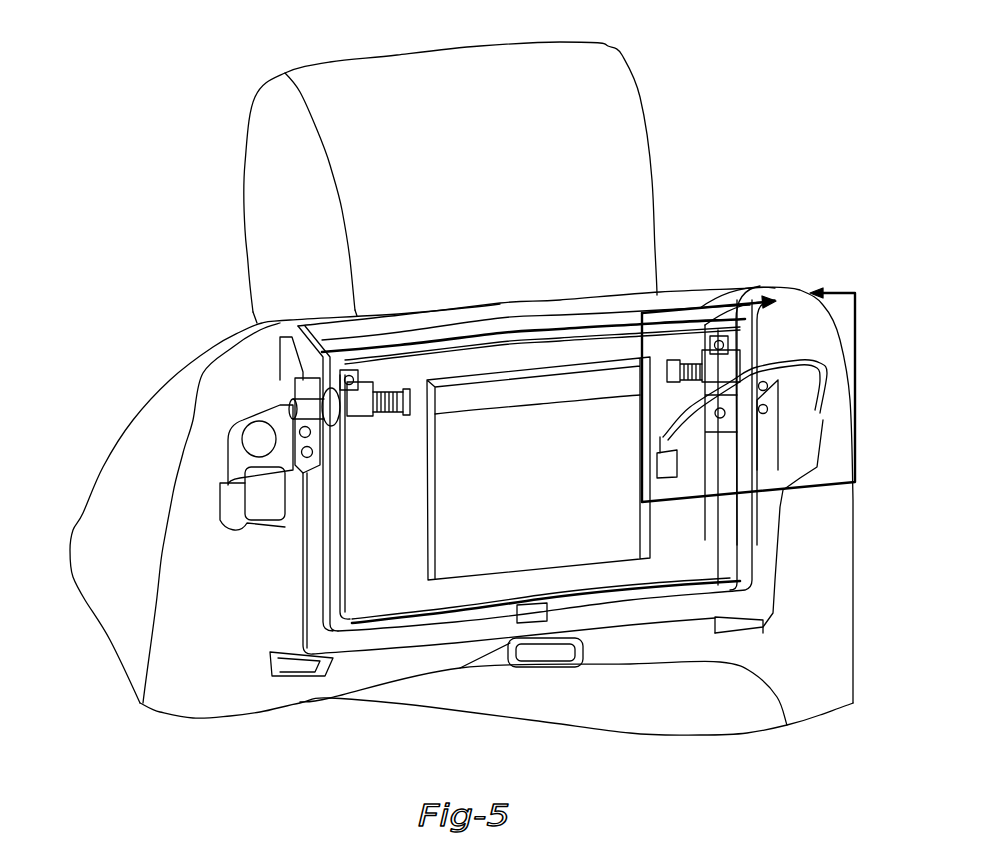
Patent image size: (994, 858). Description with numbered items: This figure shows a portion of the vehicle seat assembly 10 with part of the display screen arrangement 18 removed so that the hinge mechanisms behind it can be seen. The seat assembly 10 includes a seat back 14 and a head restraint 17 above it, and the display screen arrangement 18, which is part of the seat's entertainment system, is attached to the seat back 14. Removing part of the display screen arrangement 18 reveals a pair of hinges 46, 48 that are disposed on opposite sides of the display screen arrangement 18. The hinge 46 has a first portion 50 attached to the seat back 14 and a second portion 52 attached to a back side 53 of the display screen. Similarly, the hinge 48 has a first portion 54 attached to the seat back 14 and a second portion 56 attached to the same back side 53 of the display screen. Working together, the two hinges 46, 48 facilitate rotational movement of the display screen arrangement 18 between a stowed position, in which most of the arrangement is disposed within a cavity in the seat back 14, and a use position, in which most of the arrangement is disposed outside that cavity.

The seat assembly 10 is at (733, 104).
The seat back 14 is at (856, 576).
The head restraint 17 is at (645, 137).
The display screen arrangement 18 is at (663, 304).
The hinge 46 is at (319, 402).
The hinge 48 is at (758, 345).
The first portion 50 is at (307, 457).
The second portion 52 is at (360, 386).
The back side 53 is at (468, 487).
The first portion 54 is at (764, 396).
The second portion 56 is at (712, 296).